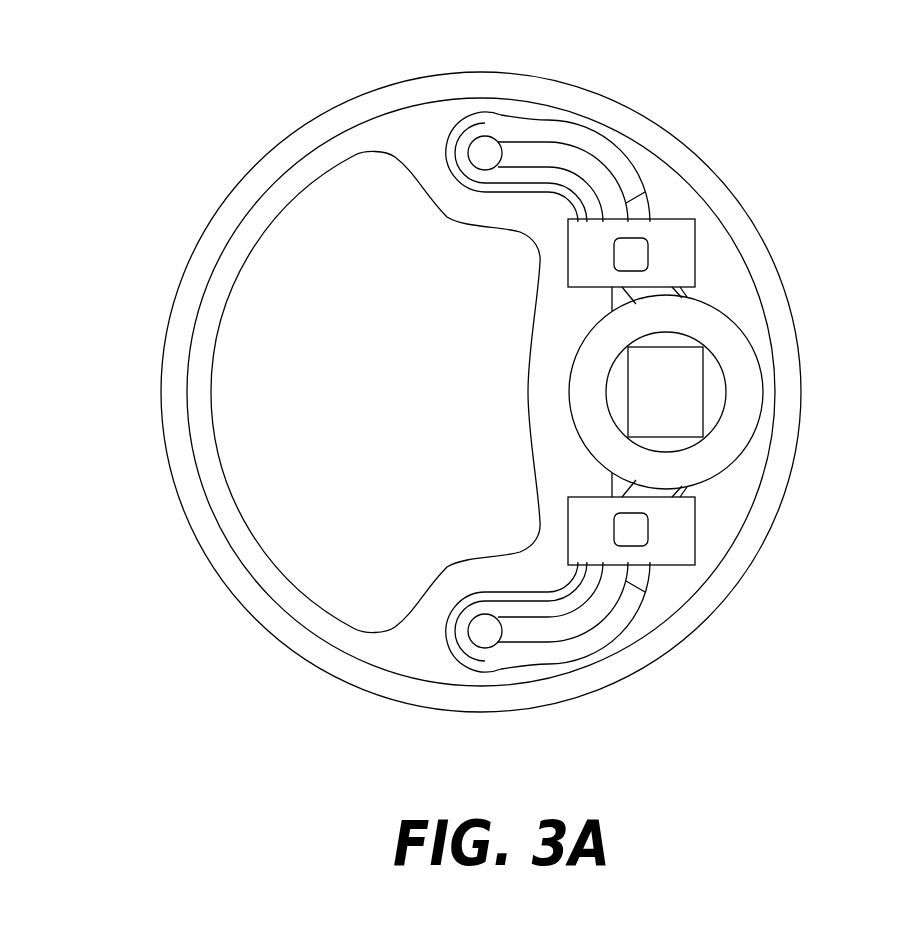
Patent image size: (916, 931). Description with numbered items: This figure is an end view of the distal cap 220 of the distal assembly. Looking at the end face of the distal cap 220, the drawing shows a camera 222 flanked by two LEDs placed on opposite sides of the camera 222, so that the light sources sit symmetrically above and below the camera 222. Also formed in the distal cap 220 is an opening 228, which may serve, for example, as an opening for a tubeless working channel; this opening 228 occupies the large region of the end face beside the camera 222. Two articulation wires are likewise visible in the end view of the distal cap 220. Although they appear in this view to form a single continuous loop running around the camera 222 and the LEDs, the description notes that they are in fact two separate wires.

The distal cap 220 is at (155, 159).
The opening 228 is at (350, 202).
The camera 222 is at (765, 395).